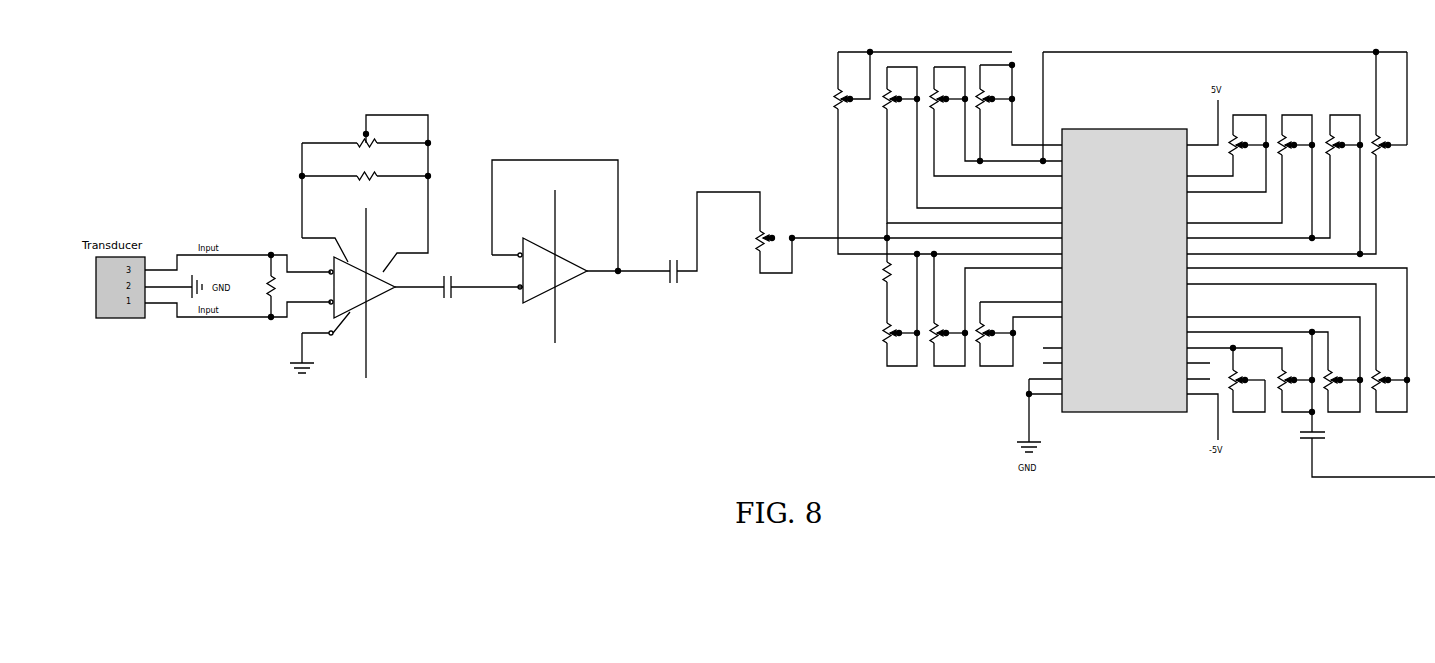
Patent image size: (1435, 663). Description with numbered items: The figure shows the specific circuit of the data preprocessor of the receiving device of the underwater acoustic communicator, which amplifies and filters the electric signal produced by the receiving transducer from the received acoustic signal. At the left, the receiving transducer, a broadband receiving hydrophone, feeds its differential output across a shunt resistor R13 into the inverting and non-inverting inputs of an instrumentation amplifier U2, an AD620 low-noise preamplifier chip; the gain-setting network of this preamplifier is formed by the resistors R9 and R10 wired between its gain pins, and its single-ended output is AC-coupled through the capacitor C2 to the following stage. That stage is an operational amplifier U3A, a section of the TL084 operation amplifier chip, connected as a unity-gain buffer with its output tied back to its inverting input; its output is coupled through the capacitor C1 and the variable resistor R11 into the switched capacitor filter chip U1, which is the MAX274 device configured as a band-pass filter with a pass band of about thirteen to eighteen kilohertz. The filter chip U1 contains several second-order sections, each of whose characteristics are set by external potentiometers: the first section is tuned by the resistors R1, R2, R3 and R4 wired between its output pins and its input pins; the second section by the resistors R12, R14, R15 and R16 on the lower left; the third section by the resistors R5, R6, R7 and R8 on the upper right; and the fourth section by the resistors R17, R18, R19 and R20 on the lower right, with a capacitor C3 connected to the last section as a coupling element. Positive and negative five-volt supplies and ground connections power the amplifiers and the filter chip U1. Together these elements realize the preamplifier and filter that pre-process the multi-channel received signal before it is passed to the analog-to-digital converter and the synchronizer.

The resistor R13 5.1K R13 is at (256, 286).
The instrumentation amplifier AD620AN U2 is at (359, 269).
The resistor R9 10K R9 is at (366, 131).
The resistor R10 2.2K R10 is at (365, 172).
The capacitor C2 is at (459, 288).
The op amp TL084ACD U3A is at (581, 259).
The capacitor C1 is at (711, 254).
The potentiometer R11 is at (909, 243).
The potentiometer R1 is at (948, 152).
The potentiometer R2 is at (972, 145).
The potentiometer R3 is at (996, 121).
The potentiometer R4 is at (1019, 112).
The filter IC MAX7404EWI U1 is at (1126, 271).
The resistor R12 is at (896, 273).
The potentiometer R14 is at (901, 309).
The potentiometer R15 is at (996, 309).
The potentiometer R16 is at (1019, 334).
The potentiometer R5 is at (1392, 153).
The potentiometer R6 is at (1228, 153).
The potentiometer R7 is at (1251, 178).
The potentiometer R8 is at (1275, 186).
The potentiometer R17 is at (1226, 379).
The potentiometer R18 is at (1251, 372).
The potentiometer R19 is at (1275, 364).
The potentiometer R20 is at (1298, 340).
The capacitor C3 is at (1367, 444).